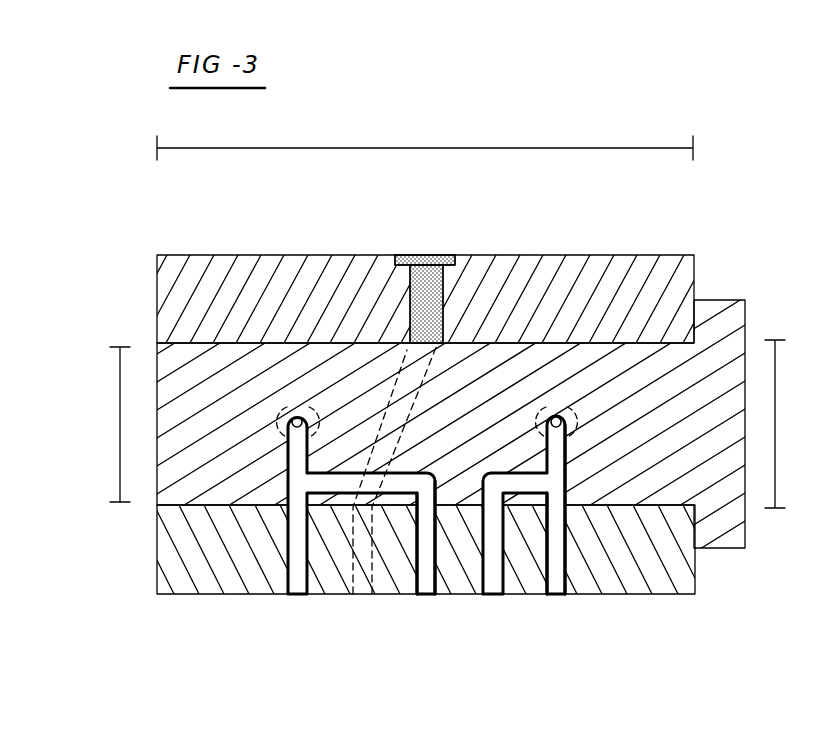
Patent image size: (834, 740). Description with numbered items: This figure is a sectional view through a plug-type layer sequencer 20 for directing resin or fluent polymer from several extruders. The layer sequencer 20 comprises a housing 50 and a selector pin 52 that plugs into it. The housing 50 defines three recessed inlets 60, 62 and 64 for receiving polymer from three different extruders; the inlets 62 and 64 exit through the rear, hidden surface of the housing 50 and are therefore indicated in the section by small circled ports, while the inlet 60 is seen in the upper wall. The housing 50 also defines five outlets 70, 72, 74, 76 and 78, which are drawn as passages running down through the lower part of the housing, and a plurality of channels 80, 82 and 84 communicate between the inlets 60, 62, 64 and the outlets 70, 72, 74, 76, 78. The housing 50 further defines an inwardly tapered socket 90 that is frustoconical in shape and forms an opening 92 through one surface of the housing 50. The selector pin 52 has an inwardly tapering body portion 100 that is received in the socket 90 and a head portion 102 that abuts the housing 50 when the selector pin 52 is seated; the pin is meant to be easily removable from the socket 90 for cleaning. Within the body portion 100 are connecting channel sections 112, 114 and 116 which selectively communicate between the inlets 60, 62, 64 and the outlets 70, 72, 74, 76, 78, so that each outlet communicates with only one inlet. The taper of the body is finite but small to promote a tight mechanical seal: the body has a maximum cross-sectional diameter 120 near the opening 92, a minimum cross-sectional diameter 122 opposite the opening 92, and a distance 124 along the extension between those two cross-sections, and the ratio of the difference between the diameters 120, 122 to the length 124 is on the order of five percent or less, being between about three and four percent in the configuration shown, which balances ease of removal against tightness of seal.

The layer sequencer 20 is at (150, 343).
The housing 50 is at (276, 262).
The selector pin 52 is at (353, 348).
The inlet 60 is at (428, 256).
The inlet 62 is at (293, 416).
The inlet 64 is at (551, 417).
The outlet 70 is at (297, 596).
The outlet 72 is at (353, 596).
The outlet 74 is at (428, 596).
The outlet 76 is at (493, 596).
The outlet 78 is at (553, 596).
The channel 80 is at (289, 496).
The channel 82 is at (404, 418).
The channel 84 is at (562, 557).
The socket 90 is at (244, 500).
The opening 92 is at (660, 340).
The body portion 100 is at (652, 487).
The head portion 102 is at (727, 548).
The connecting channel section 112 is at (343, 472).
The connecting channel section 114 is at (390, 396).
The connecting channel section 116 is at (572, 450).
The maximum cross-sectional diameter 120 is at (778, 400).
The minimum cross-sectional diameter 122 is at (118, 385).
The distance 124 is at (455, 146).